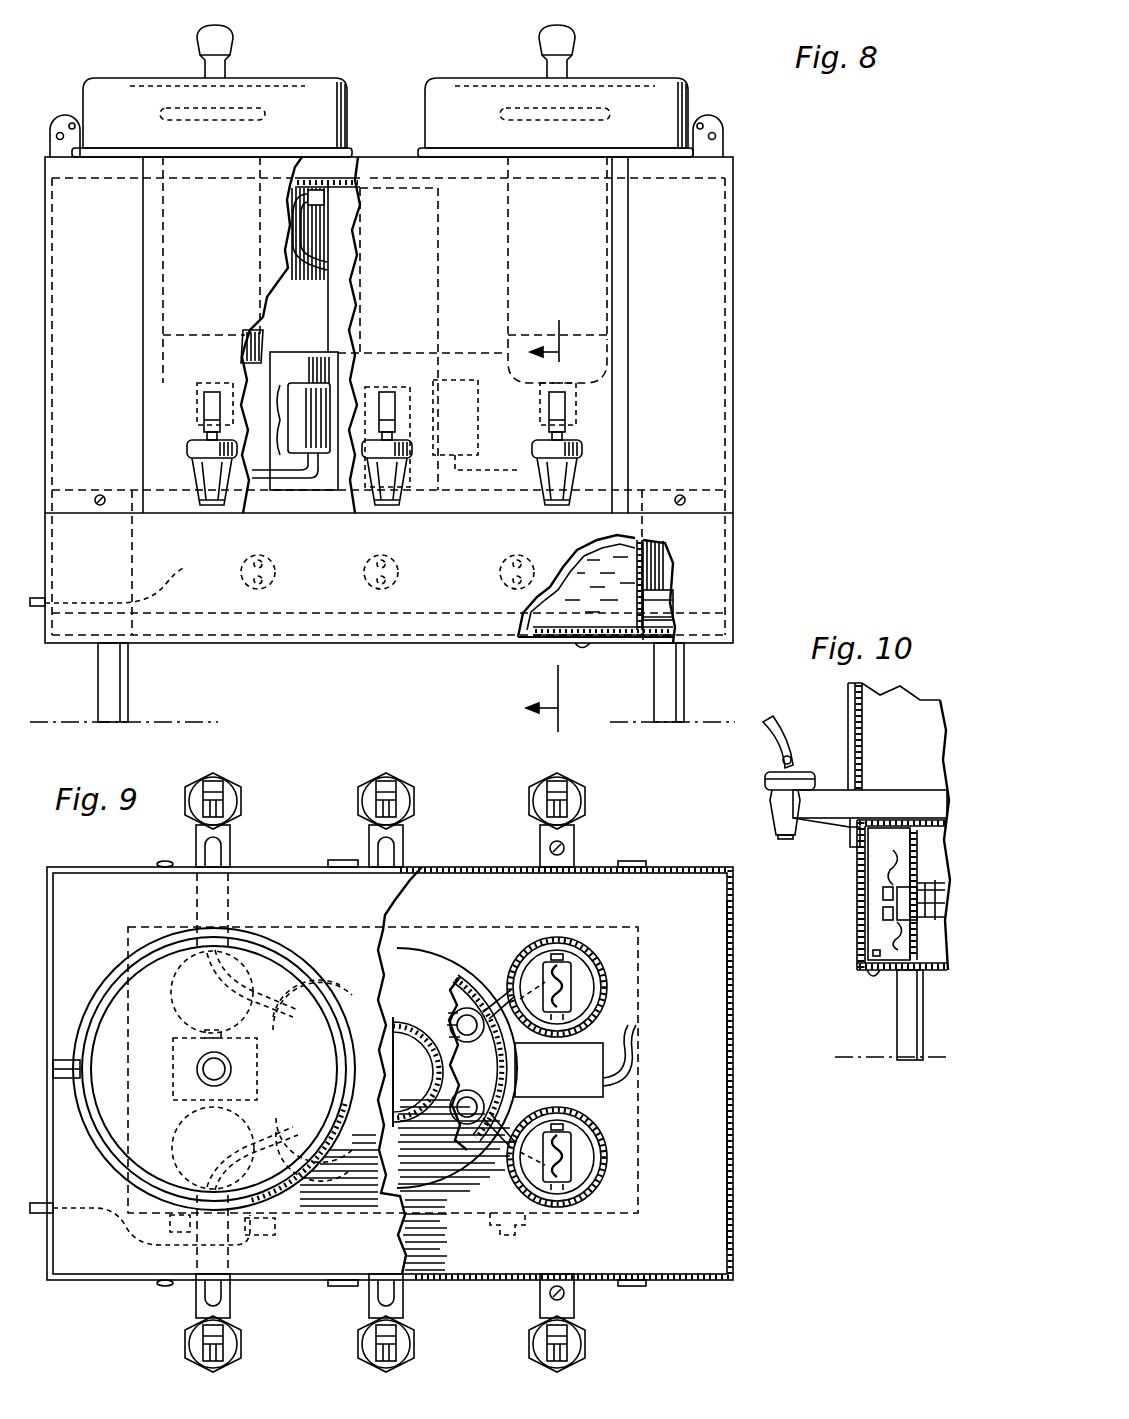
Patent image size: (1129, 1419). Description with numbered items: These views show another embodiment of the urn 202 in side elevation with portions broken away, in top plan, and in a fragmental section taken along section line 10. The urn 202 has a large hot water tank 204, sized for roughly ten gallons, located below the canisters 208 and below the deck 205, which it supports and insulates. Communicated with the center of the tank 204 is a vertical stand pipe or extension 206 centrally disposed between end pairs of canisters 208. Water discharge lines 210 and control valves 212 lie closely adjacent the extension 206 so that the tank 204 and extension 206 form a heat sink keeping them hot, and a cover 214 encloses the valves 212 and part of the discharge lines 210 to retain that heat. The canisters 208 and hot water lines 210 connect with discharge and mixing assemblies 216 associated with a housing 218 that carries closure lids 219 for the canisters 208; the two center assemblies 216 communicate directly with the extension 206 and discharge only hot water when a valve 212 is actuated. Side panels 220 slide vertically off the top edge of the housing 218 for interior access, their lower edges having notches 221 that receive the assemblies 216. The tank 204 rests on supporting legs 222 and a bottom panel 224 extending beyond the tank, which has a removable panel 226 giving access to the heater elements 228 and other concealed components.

In FIG. 8, the section line 10 is at (565, 515).
In FIG. 8, the urn 202 is at (738, 222).
In FIG. 9, the urn 202 is at (735, 1066).
In FIG. 8, the hot water tank 204 is at (665, 598).
In FIG. 10, the hot water tank 204 is at (910, 947).
In FIG. 9, the deck 205 is at (702, 1172).
In FIG. 10, the deck 205 is at (902, 820).
In FIG. 8, the stand pipe or extension 206 is at (343, 218).
In FIG. 9, the stand pipe or extension 206 is at (368, 1180).
In FIG. 9, the canisters 208 is at (607, 978).
In FIG. 9, the water discharge lines 210 is at (490, 1005).
In FIG. 9, the control valves 212 is at (463, 1010).
In FIG. 9, the cover 214 is at (432, 962).
In FIG. 9, the discharge and mixing assemblies 216 is at (587, 843).
In FIG. 10, the discharge and mixing assemblies 216 is at (818, 768).
In FIG. 8, the housing 218 is at (702, 340).
In FIG. 9, the housing 218 is at (730, 1153).
In FIG. 8, the closure lids 219 is at (640, 118).
In FIG. 8, the side panels 220 is at (572, 244).
In FIG. 9, the side panels 220 is at (430, 868).
In FIG. 10, the side panels 220 is at (865, 708).
In FIG. 8, the notches 221 is at (582, 470).
In FIG. 10, the notches 221 is at (850, 827).
In FIG. 10, the supporting legs 222 is at (907, 1040).
In FIG. 10, the bottom panel 224 is at (887, 963).
In FIG. 8, the removable panel 226 is at (470, 567).
In FIG. 10, the removable panel 226 is at (857, 883).
In FIG. 10, the heater elements 228 is at (890, 913).